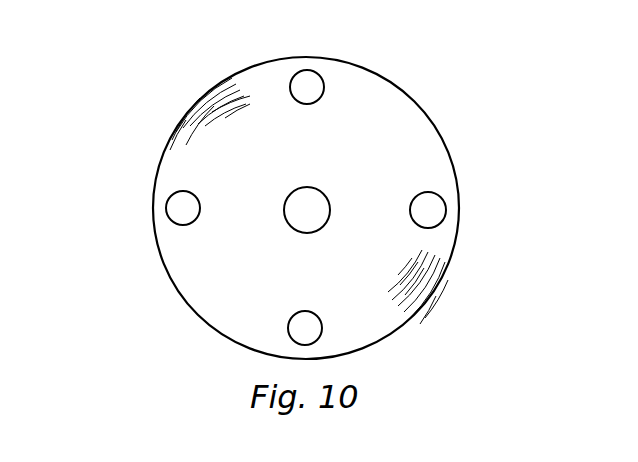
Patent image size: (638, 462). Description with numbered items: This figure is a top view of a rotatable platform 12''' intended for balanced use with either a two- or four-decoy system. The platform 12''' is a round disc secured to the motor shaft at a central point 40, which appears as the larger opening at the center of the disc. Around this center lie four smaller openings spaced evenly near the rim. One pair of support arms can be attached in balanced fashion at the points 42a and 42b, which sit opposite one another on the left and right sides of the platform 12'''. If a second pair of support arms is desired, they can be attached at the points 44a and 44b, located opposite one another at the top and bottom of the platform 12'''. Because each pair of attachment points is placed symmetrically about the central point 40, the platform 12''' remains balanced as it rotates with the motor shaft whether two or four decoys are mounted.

The rotatable platform 12''' is at (311, 198).
The point 40 is at (307, 187).
The point 42a is at (166, 210).
The point 42b is at (446, 213).
The point 44a is at (310, 70).
The point 44b is at (303, 345).